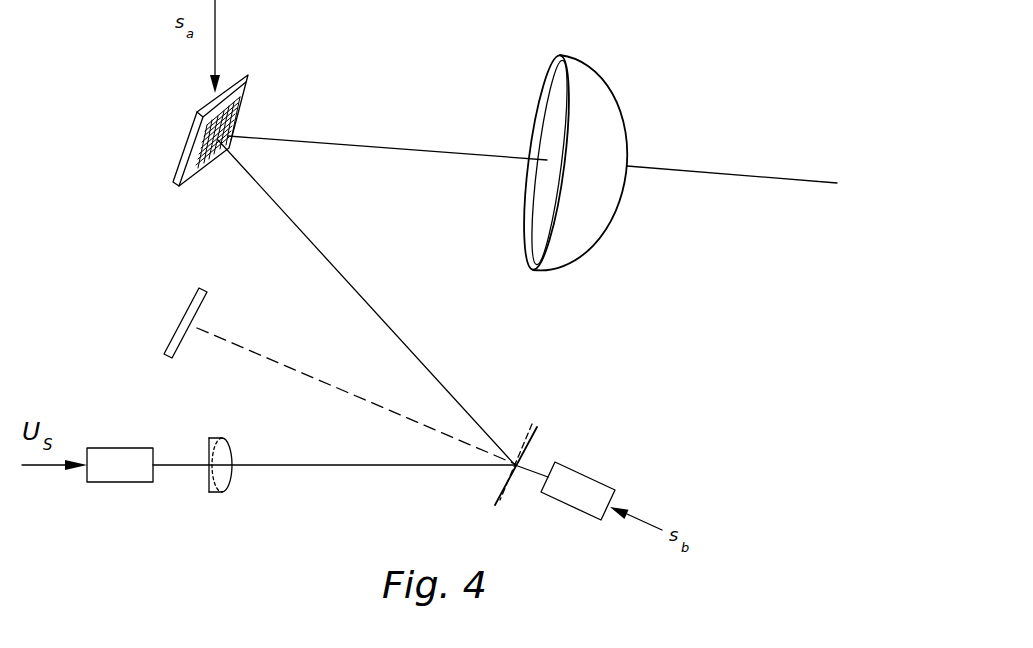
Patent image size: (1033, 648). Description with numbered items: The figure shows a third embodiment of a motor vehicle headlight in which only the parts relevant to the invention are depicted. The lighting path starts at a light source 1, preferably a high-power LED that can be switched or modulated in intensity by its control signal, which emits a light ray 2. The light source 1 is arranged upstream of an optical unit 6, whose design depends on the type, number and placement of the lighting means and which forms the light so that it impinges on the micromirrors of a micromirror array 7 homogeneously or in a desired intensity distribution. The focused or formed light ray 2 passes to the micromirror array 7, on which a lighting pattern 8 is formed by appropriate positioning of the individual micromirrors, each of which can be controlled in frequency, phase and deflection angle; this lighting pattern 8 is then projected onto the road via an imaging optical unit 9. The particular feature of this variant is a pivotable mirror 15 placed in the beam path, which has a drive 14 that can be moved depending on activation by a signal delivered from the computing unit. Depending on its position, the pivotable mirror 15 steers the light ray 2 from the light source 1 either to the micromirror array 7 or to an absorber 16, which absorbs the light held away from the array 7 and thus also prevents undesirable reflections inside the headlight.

The light source 1 is at (120, 467).
The light ray 2 is at (312, 467).
The optical unit 6 is at (217, 468).
The micromirror array 7 is at (190, 173).
The lighting pattern 8 is at (221, 143).
The imaging optical unit 9 is at (608, 133).
The drive 14 is at (578, 480).
The pivotable mirror 15 is at (490, 478).
The absorber 16 is at (190, 317).